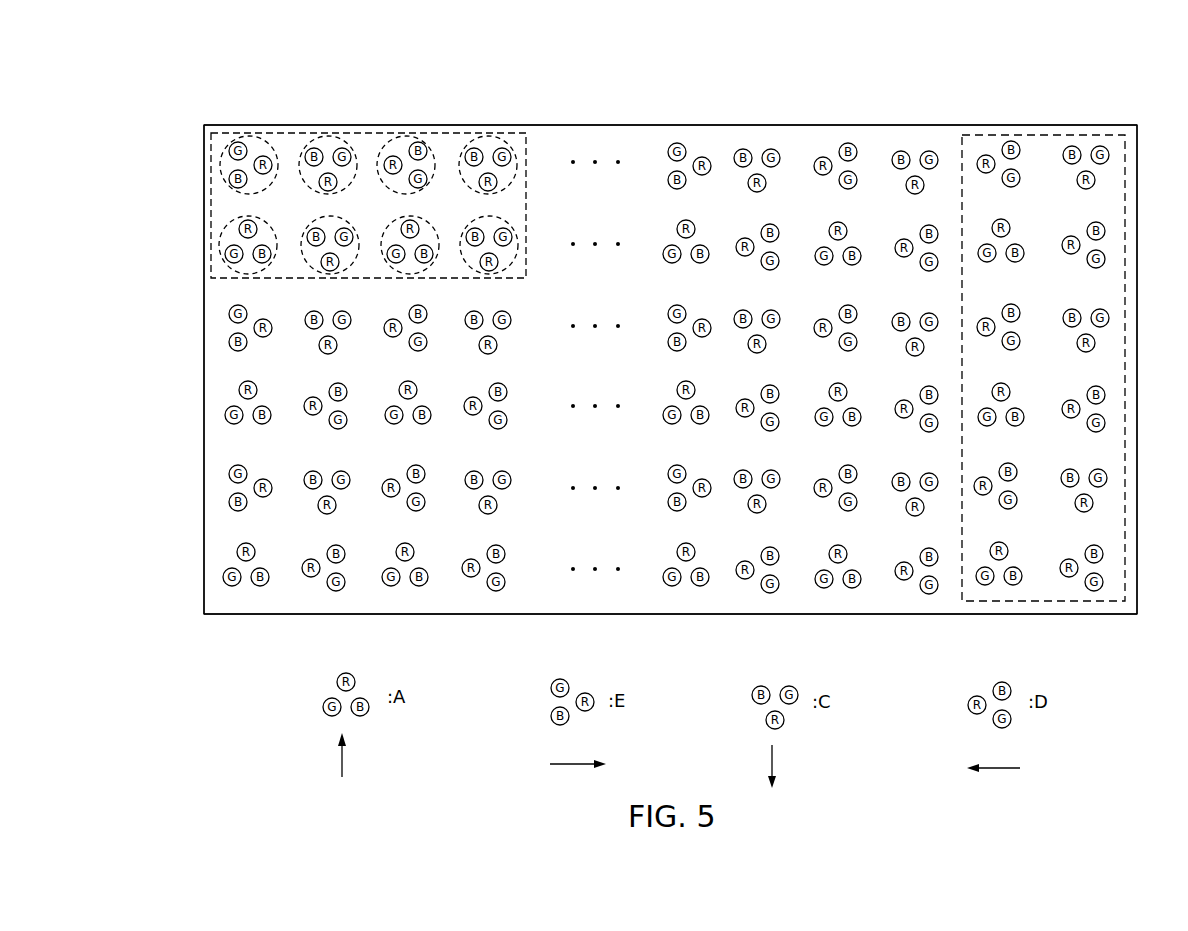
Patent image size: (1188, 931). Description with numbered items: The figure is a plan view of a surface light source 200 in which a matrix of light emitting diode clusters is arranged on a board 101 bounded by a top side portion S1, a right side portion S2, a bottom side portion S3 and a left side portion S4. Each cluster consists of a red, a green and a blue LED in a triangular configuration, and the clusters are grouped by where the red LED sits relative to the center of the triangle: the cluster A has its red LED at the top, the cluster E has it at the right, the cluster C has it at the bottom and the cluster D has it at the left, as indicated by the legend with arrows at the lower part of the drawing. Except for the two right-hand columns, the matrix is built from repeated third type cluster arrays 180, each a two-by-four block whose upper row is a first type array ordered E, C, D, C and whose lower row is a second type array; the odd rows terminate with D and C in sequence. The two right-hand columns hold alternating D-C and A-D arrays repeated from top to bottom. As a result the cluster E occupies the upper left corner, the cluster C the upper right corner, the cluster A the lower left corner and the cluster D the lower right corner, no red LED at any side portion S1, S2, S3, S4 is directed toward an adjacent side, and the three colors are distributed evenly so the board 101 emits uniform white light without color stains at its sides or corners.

The surface light source 200 is at (700, 41).
The board 101 is at (620, 150).
The third type cluster array 180 is at (305, 132).
The top side portion S1 is at (723, 124).
The right side portion S2 is at (1138, 381).
The bottom side portion S3 is at (630, 614).
The left side portion S4 is at (204, 330).
The cluster A is at (228, 225).
The cluster C is at (347, 142).
The cluster D is at (433, 143).
The cluster E is at (263, 142).